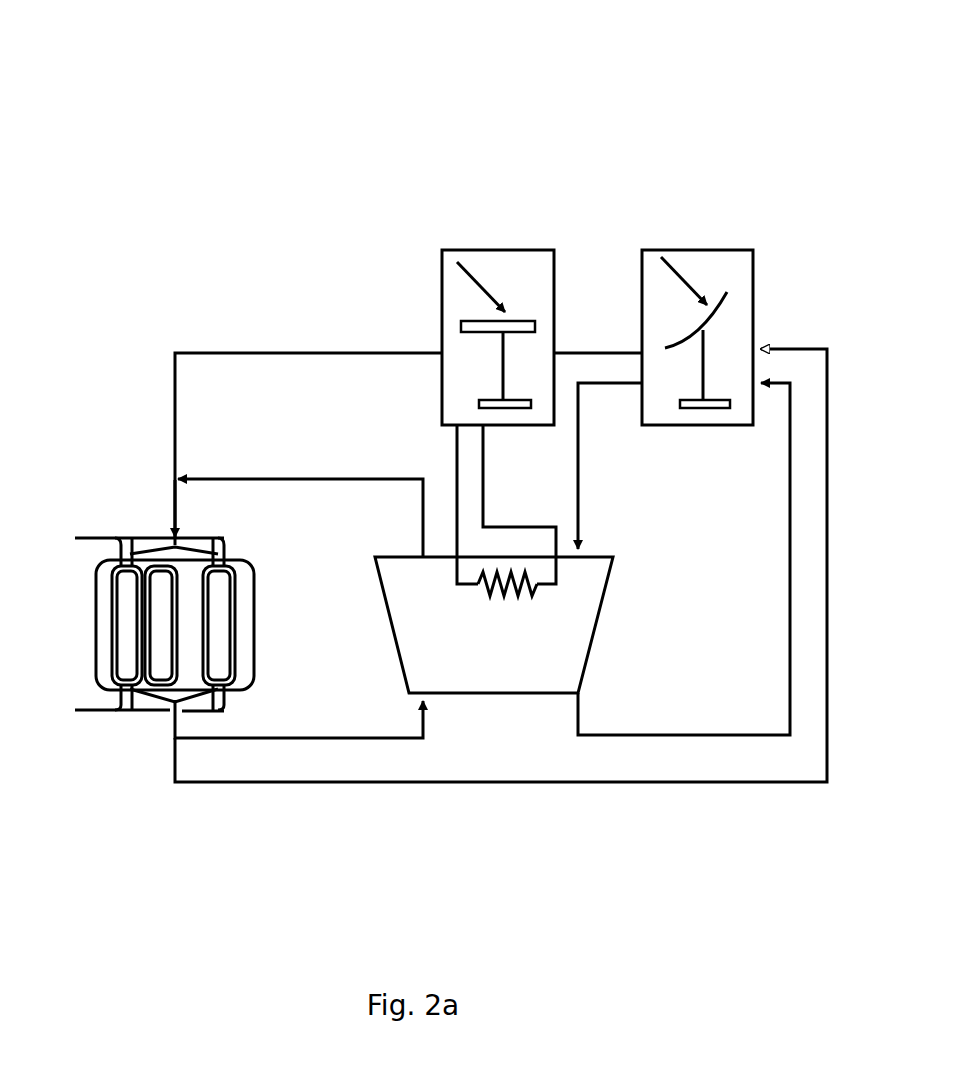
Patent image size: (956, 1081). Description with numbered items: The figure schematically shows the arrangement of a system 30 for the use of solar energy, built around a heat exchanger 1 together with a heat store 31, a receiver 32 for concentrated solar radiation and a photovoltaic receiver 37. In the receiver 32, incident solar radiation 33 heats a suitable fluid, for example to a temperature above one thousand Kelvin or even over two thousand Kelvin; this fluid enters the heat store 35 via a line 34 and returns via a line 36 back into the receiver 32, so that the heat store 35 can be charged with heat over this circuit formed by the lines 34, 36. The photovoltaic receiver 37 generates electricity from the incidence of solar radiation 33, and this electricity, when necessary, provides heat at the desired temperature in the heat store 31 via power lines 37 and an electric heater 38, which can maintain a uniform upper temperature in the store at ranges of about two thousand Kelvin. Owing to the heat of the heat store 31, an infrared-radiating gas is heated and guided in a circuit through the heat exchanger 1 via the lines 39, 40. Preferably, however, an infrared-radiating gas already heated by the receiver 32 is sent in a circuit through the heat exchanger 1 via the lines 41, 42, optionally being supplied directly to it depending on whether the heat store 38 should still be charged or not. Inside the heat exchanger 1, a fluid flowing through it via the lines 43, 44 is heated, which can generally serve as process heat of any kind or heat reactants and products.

The heat exchanger 1 is at (85, 809).
The system 30 is at (262, 128).
The heat store 31 is at (617, 807).
The receiver 32 is at (752, 178).
The solar radiation 33 is at (490, 290).
The line 34 is at (585, 518).
The heat store 35 is at (598, 624).
The line 36 is at (693, 730).
The photovoltaic receiver 37 is at (433, 178).
The electric heater 38 is at (508, 596).
The line 39 is at (298, 478).
The line 40 is at (312, 736).
The line 41 is at (308, 352).
The line 42 is at (737, 784).
The line 43 is at (92, 537).
The line 44 is at (83, 712).